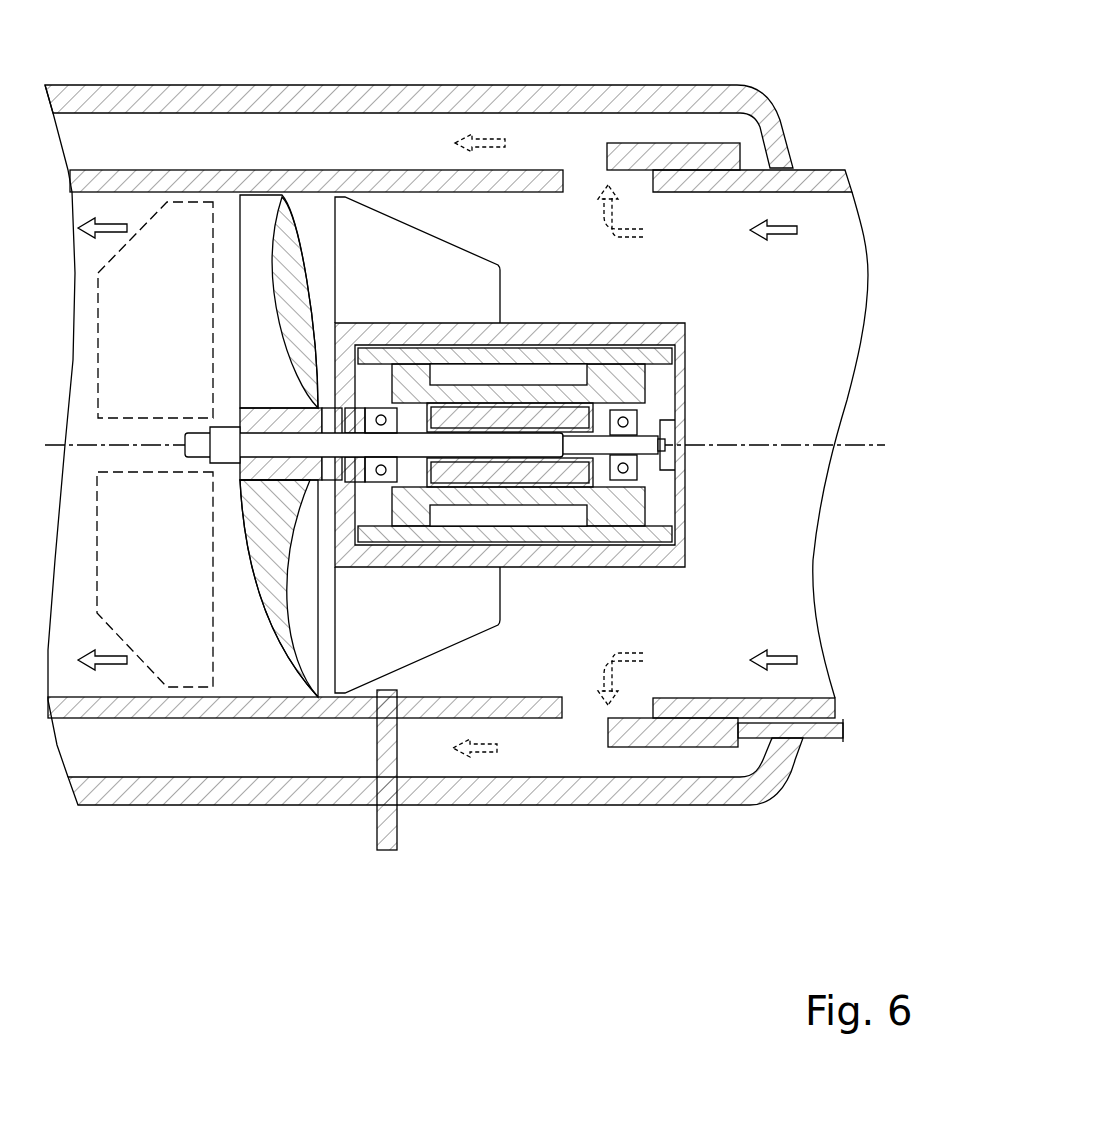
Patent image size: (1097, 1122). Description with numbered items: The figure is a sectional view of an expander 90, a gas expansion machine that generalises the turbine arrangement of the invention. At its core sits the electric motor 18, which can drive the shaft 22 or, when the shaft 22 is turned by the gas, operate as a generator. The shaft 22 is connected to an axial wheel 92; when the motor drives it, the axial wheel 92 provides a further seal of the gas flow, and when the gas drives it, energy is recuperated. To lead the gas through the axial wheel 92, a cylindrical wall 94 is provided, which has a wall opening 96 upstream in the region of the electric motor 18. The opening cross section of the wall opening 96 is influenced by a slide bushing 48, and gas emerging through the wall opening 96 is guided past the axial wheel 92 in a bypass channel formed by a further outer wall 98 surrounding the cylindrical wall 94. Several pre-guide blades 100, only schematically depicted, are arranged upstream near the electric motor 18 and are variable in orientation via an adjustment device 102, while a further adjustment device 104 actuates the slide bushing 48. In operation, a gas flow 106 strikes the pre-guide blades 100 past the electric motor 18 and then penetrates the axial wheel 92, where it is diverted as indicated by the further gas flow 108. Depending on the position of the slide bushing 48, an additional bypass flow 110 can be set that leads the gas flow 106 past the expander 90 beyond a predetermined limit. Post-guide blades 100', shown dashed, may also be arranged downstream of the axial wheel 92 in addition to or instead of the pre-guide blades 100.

The electric motor 18 is at (712, 368).
The shaft 22 is at (318, 688).
The slide bushing 48 is at (665, 163).
The expander 90 is at (105, 853).
The axial wheel 92 is at (283, 270).
The cylindrical wall 94 is at (813, 183).
The wall opening 96 is at (585, 185).
The further outer wall 98 is at (302, 100).
The pre-guide blades 100 is at (630, 351).
The post-guide blades 100' is at (185, 457).
The adjustment device 102 is at (387, 820).
The further adjustment device 104 is at (818, 740).
The gas flow 106 is at (793, 225).
The further gas flow 108 is at (110, 222).
The bypass flow 110 is at (483, 143).